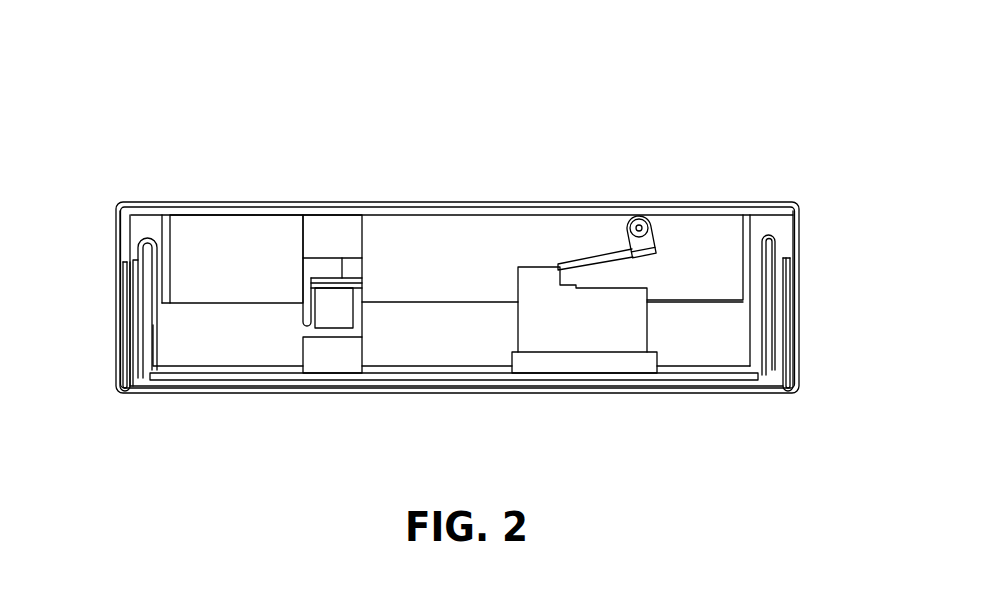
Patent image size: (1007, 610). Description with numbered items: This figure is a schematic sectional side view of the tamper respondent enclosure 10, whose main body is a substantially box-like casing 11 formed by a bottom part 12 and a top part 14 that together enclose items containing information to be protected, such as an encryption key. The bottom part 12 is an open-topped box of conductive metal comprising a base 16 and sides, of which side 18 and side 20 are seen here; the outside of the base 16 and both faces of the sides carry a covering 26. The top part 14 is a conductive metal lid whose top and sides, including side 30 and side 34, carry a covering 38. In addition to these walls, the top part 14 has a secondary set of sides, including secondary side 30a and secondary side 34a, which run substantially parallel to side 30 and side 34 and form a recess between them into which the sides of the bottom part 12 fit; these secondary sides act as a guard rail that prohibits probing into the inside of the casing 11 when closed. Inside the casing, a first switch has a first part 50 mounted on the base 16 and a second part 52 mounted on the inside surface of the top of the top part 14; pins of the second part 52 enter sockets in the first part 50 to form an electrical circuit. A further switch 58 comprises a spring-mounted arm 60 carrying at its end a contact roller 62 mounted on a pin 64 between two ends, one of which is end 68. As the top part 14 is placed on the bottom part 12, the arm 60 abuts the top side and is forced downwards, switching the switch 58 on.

The tamper respondent enclosure 10 is at (214, 101).
The casing 11 is at (788, 358).
The bottom part 12 is at (145, 407).
The top part 14 is at (238, 203).
The base 16 is at (238, 377).
The side 18 is at (767, 323).
The side 20 is at (147, 283).
The covering 26 is at (183, 392).
The side 30 is at (787, 268).
The secondary side 30a is at (748, 236).
The side 34 is at (125, 352).
The secondary side 34a is at (135, 258).
The covering 38 is at (146, 203).
The first part 50 is at (330, 357).
The second part 52 is at (333, 232).
The switch 58 is at (616, 339).
The spring-mounted arm 60 is at (580, 263).
The contact roller 62 is at (655, 228).
The pin 64 is at (643, 221).
The end 68 is at (635, 240).